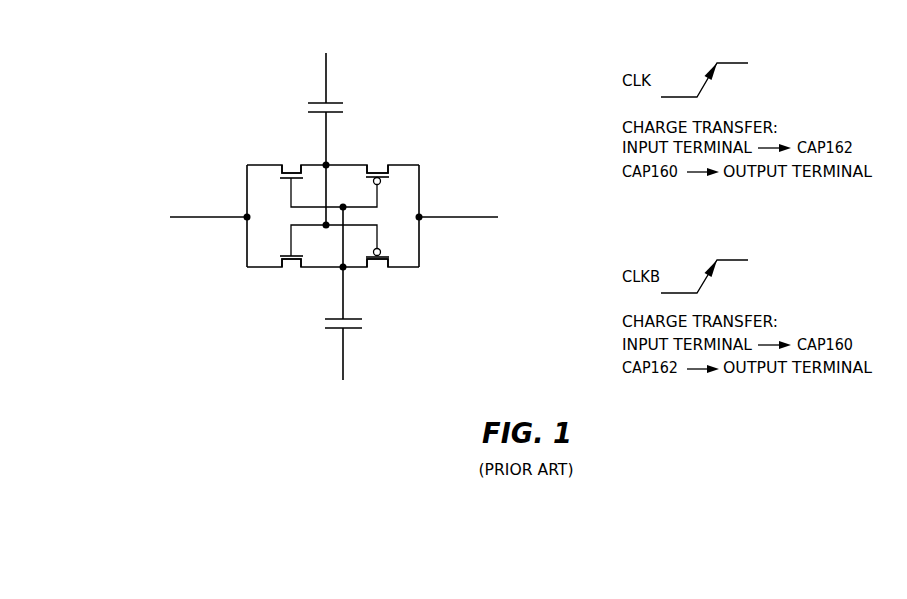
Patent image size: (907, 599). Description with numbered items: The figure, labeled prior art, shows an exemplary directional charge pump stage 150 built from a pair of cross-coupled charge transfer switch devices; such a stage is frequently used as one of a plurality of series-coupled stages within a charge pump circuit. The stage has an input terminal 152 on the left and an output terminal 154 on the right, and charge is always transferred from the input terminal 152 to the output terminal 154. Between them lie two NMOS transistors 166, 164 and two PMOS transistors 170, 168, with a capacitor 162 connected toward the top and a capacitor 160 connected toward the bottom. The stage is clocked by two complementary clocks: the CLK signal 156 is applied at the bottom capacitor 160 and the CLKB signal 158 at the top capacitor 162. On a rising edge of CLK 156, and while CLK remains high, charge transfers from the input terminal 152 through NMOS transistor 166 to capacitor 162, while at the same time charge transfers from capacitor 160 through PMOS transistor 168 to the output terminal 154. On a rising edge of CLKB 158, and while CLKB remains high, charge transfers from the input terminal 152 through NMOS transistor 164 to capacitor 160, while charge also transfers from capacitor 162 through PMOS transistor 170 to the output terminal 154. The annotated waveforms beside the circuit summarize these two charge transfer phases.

The directional charge pump stage 150 is at (476, 51).
The input terminal 152 is at (203, 216).
The output terminal 154 is at (461, 216).
The CLK clock 156 is at (343, 360).
The CLKB clock 158 is at (326, 76).
The capacitor 160 is at (367, 325).
The capacitor 162 is at (348, 110).
The NMOS transistor 164 is at (291, 274).
The NMOS transistor 166 is at (290, 161).
The PMOS transistor 168 is at (376, 271).
The PMOS transistor 170 is at (378, 164).